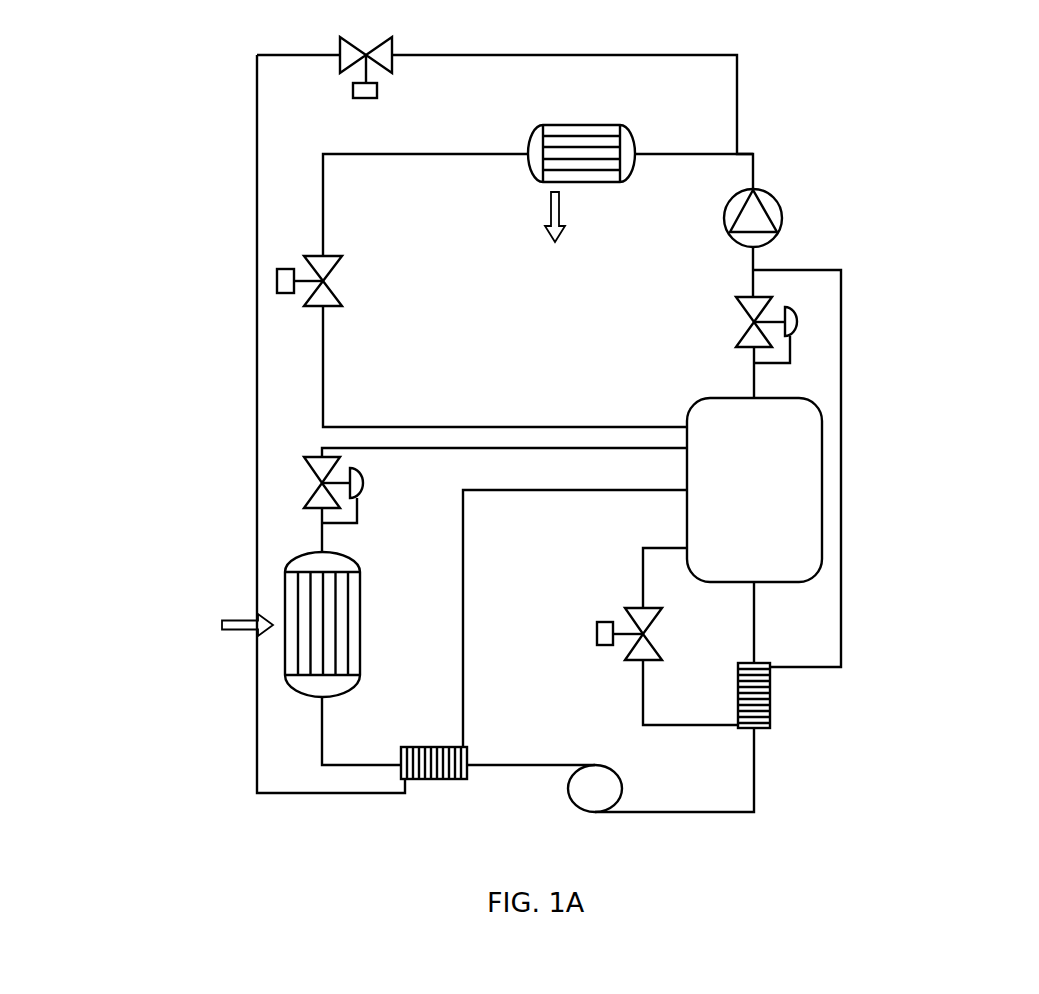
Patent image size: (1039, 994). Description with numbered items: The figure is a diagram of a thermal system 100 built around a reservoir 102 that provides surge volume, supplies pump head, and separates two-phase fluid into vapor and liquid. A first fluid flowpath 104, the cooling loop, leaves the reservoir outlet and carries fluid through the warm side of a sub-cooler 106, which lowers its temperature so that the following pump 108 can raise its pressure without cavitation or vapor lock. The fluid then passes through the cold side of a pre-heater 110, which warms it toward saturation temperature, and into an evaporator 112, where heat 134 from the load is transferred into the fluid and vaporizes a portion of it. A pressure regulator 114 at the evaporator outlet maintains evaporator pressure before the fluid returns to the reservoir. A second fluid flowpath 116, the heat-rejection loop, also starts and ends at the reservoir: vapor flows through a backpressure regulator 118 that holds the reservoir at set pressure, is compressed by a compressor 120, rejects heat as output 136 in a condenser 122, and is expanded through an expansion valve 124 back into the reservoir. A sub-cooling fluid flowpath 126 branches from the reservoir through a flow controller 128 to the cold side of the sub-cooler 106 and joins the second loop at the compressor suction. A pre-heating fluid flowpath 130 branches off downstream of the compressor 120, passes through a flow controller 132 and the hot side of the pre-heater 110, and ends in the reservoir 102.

The thermal system 100 is at (962, 142).
The reservoir 102 is at (823, 515).
The first fluid flowpath 104 is at (770, 768).
The sub-cooler 106 is at (772, 695).
The pump 108 is at (567, 802).
The pre-heater 110 is at (432, 781).
The evaporator 112 is at (280, 565).
The pressure regulator 114 is at (300, 480).
The second fluid flowpath 116 is at (505, 423).
The pressure regulator 118 is at (805, 328).
The compressor 120 is at (795, 220).
The condenser 122 is at (634, 120).
The expansion valve 124 is at (277, 280).
The sub-cooling fluid flowpath 126 is at (692, 730).
The flow controller 128 is at (597, 633).
The pre-heating fluid flowpath 130 is at (247, 768).
The flow controller 132 is at (338, 93).
The heat 134 is at (226, 627).
The output 136 is at (556, 234).